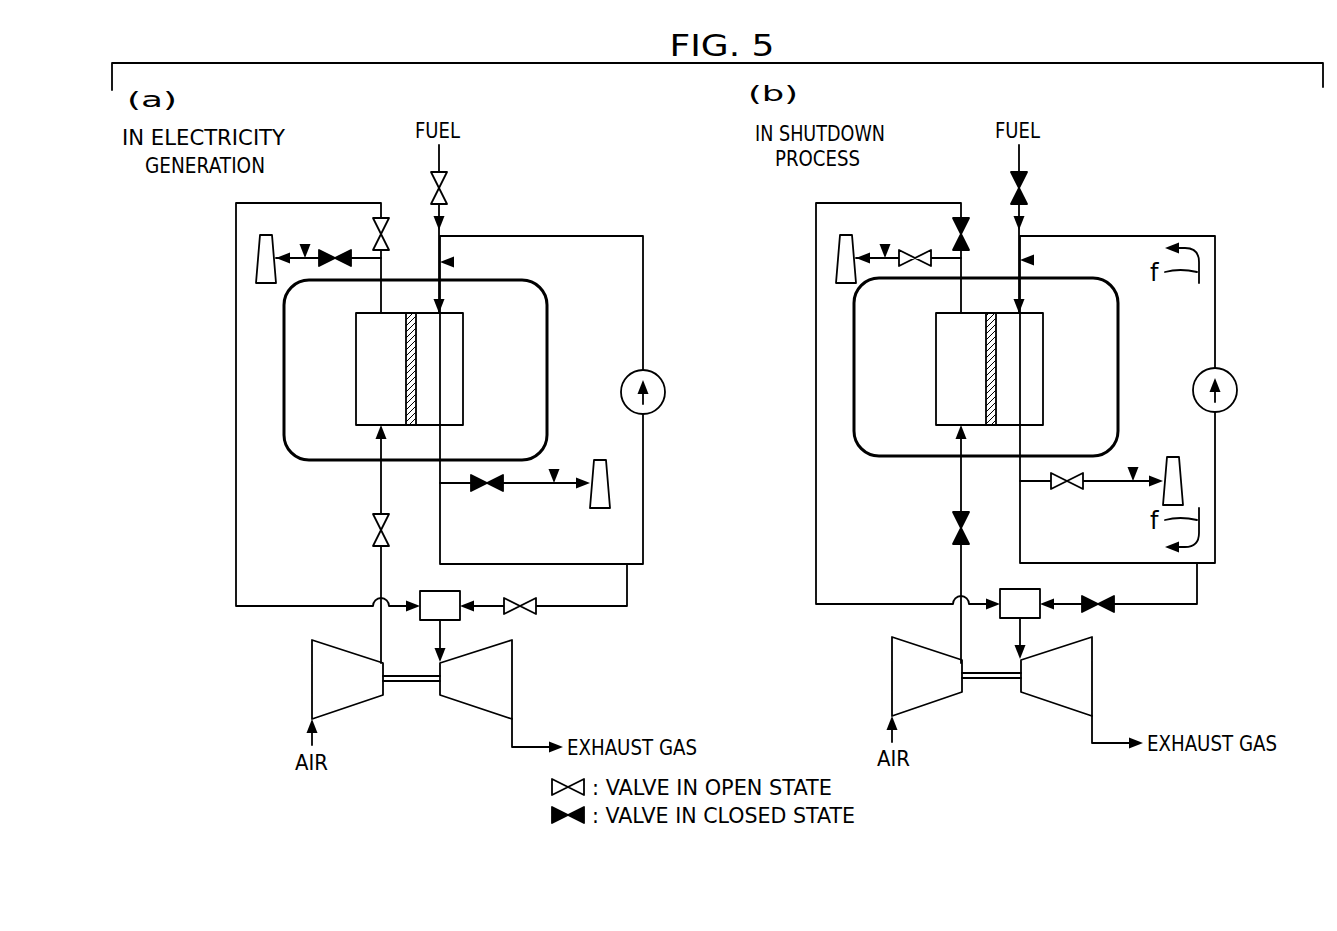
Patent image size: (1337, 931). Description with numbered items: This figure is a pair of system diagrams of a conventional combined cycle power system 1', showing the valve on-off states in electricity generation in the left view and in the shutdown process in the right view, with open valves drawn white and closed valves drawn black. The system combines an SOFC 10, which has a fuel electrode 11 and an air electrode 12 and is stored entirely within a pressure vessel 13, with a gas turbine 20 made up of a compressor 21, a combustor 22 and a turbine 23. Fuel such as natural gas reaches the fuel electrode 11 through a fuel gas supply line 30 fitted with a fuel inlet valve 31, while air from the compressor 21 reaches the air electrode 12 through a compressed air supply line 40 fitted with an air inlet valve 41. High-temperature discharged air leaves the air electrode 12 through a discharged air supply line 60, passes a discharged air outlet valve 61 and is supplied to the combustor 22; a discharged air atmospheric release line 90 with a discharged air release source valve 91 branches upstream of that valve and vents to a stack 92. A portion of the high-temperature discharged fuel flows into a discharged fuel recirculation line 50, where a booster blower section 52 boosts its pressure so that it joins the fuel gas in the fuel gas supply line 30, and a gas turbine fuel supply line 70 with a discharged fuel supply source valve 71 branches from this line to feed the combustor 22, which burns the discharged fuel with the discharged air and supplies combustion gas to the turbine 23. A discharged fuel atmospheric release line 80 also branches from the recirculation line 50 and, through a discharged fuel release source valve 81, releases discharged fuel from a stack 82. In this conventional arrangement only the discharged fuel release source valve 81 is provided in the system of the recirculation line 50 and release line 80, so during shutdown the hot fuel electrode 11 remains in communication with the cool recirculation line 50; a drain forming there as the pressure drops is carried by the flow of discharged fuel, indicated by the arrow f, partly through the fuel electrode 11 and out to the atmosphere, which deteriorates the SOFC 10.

The combined cycle power system 1' is at (967, 187).
The SOFC 10 is at (474, 346).
The fuel electrode 11 is at (450, 373).
The air electrode 12 is at (374, 368).
The pressure vessel 13 is at (540, 323).
The gas turbine 20 is at (412, 722).
The compressor 21 is at (311, 678).
The combustor 22 is at (425, 591).
The turbine 23 is at (513, 678).
The fuel gas supply line 30 is at (456, 262).
The fuel inlet valve 31 is at (447, 188).
The compressed air supply line 40 is at (367, 492).
The air inlet valve 41 is at (373, 530).
The discharged fuel recirculation line 50 is at (658, 525).
The booster blower section 52 is at (661, 403).
The discharged air supply line 60 is at (222, 355).
The discharged air outlet valve 61 is at (383, 217).
The gas turbine fuel supply line 70 is at (609, 622).
The discharged fuel supply source valve 71 is at (536, 613).
The discharged fuel atmospheric release line 80 is at (554, 469).
The discharged fuel release source valve 81 is at (484, 495).
The stack 82 is at (612, 485).
The discharged air atmospheric release line 90 is at (305, 243).
The discharged air release source valve 91 is at (338, 249).
The stack 92 is at (256, 258).